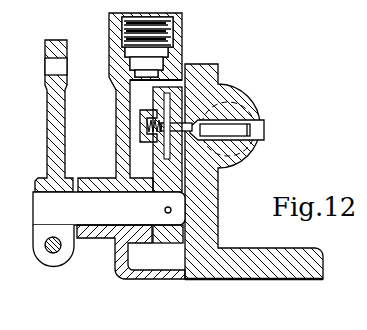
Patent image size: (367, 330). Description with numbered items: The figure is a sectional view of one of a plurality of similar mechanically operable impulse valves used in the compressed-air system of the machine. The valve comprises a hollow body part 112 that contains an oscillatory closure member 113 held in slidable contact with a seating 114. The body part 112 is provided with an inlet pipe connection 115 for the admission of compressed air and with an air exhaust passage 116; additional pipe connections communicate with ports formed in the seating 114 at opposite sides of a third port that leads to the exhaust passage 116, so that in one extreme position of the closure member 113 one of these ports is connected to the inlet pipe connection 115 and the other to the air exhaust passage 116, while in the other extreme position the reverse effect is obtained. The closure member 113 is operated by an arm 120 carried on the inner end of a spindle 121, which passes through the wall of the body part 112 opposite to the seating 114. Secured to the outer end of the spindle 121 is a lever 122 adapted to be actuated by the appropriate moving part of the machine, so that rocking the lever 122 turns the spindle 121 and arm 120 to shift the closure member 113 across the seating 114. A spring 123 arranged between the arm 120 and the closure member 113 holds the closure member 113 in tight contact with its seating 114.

The hollow body part 112 is at (166, 258).
The oscillatory closure member 113 is at (172, 103).
The seating 114 is at (192, 172).
The inlet pipe connection 115 is at (182, 18).
The air exhaust passage 116 is at (253, 126).
The arm 120 is at (128, 164).
The spindle 121 is at (99, 214).
The lever 122 is at (65, 108).
The spring 123 is at (143, 130).